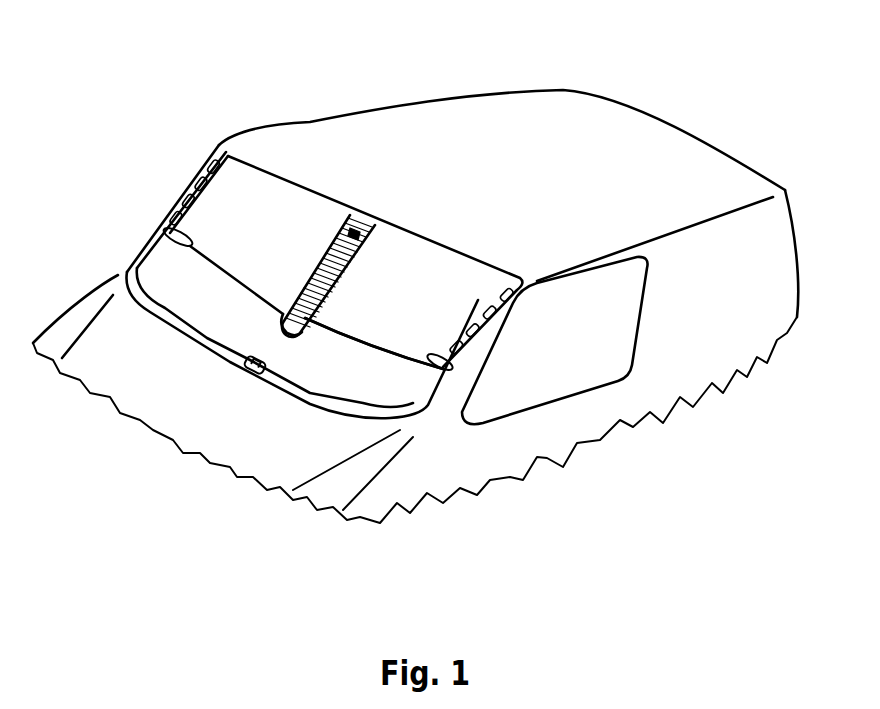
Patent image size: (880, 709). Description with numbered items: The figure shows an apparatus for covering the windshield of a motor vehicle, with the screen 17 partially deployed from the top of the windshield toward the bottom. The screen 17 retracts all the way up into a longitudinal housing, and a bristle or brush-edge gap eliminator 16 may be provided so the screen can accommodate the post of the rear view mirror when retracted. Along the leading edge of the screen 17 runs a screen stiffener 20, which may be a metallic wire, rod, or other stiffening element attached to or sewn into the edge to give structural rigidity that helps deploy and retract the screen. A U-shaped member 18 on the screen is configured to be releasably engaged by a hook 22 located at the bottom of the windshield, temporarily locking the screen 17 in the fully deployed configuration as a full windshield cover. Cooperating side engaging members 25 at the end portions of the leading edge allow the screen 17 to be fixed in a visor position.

The brush-edge gap eliminator 16 is at (320, 252).
The screen 17 is at (413, 272).
The U-shaped member 18 is at (272, 317).
The screen stiffener 20 is at (383, 357).
The hook 22 is at (252, 377).
The cooperating side engaging members 25 is at (189, 229).